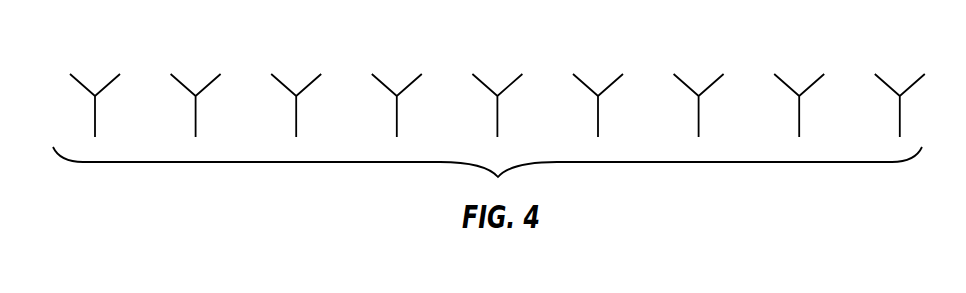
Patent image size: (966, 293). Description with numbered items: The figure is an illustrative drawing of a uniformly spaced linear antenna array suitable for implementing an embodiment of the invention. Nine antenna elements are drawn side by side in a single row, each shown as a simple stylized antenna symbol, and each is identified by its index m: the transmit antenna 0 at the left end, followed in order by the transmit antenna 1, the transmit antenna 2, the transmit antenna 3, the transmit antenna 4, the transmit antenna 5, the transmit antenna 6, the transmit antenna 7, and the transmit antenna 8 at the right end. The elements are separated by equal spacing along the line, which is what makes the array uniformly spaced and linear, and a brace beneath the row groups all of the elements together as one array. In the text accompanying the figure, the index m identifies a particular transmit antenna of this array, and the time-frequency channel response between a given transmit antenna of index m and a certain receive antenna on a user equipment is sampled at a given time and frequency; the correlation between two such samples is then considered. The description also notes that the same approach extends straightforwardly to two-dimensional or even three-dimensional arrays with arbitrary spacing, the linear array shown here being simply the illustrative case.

The transmit antenna 0 is at (95, 93).
The transmit antenna 1 is at (196, 93).
The transmit antenna 2 is at (296, 93).
The transmit antenna 3 is at (397, 93).
The transmit antenna 4 is at (497, 93).
The transmit antenna 5 is at (598, 93).
The transmit antenna 6 is at (699, 93).
The transmit antenna 7 is at (799, 93).
The transmit antenna 8 is at (900, 93).